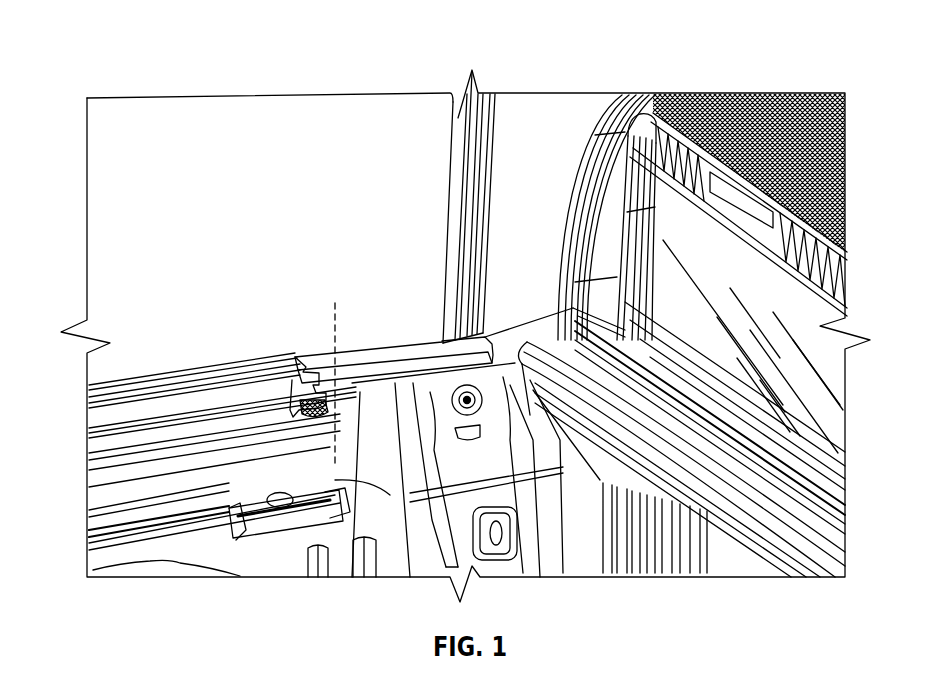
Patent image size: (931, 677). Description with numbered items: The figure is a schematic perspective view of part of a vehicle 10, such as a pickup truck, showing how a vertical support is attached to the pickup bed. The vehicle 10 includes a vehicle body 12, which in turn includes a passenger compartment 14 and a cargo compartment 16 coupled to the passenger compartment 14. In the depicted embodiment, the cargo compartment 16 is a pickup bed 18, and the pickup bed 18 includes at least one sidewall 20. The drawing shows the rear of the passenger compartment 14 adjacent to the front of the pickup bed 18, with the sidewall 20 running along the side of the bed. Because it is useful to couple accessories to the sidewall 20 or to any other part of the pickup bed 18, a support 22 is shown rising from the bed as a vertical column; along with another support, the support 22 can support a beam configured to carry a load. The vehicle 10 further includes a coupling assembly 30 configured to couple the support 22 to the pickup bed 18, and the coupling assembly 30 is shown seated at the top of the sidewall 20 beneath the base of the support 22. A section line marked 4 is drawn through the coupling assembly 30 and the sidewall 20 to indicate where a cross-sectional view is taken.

The vehicle 10 is at (742, 62).
The vehicle body 12 is at (172, 372).
The passenger compartment 14 is at (598, 128).
The cargo compartment 16 is at (185, 372).
The pickup bed 18 is at (100, 386).
The sidewall 20 is at (98, 472).
The support 22 is at (450, 128).
The coupling assembly 30 is at (387, 332).
The section line 4- 4 is at (333, 305).